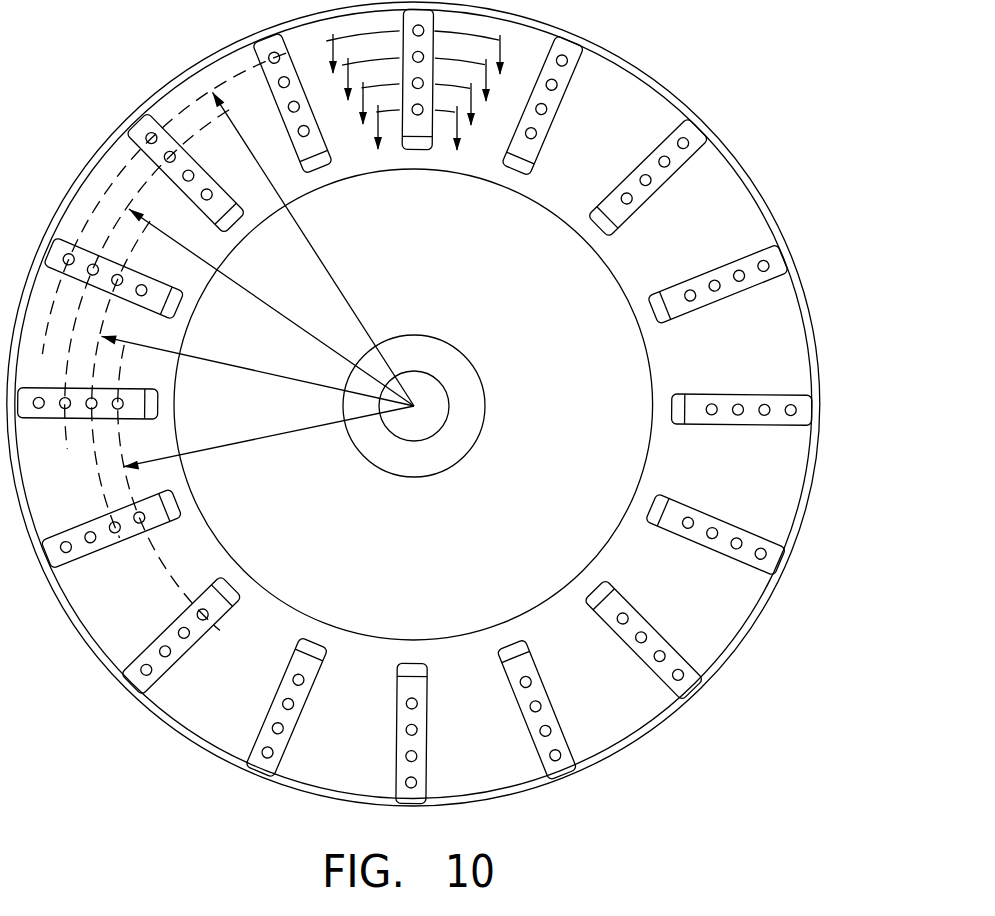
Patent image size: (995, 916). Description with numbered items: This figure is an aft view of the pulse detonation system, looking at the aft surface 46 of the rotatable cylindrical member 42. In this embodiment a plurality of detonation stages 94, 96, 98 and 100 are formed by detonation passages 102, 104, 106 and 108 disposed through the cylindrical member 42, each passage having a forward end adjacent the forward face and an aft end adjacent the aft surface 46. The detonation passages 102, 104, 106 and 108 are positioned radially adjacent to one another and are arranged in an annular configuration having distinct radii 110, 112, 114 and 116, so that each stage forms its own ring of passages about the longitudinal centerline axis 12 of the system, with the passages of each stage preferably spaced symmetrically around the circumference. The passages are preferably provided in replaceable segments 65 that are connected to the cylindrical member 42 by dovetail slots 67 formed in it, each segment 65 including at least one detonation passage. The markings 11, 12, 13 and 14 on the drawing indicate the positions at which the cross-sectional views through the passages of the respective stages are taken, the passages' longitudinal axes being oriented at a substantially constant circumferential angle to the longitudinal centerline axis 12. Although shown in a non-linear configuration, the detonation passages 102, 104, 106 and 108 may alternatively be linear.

The section line 11- 11 is at (417, 53).
The longitudinal centerline axis 12 is at (418, 85).
The section line 13- 13 is at (416, 111).
The section line 14- 14 is at (416, 139).
The rotatable cylindrical member 42 is at (648, 72).
The aft surface 46 is at (715, 187).
The replaceable segment 65 is at (418, 686).
The dovetail slot 67 is at (420, 666).
The detonation stage 94 is at (172, 552).
The detonation stage 96 is at (98, 502).
The detonation stage 98 is at (70, 307).
The detonation stage 100 is at (193, 92).
The detonation passage 102 is at (690, 297).
The detonation passage 104 is at (738, 405).
The detonation passage 106 is at (738, 542).
The detonation passage 108 is at (681, 128).
The radius 110 is at (245, 447).
The radius 112 is at (223, 366).
The radius 114 is at (242, 286).
The radius 116 is at (360, 315).